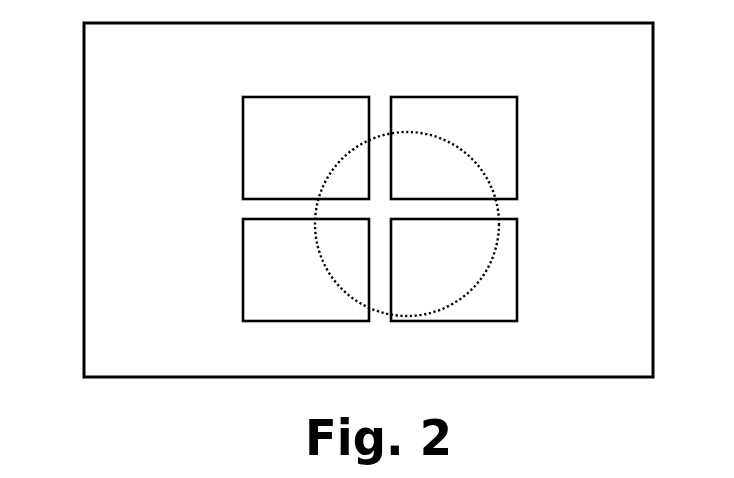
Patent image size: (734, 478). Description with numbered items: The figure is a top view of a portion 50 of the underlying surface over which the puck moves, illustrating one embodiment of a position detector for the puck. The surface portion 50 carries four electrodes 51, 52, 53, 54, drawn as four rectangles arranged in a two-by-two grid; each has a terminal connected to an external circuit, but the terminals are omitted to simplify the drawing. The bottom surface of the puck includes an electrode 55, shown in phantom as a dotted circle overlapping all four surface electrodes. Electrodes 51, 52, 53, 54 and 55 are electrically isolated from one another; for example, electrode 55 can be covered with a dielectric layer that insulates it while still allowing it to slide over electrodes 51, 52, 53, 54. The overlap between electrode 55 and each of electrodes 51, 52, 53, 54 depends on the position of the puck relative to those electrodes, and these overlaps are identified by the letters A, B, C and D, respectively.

The portion of the surface 50 is at (651, 80).
The electrode 51 is at (253, 127).
The electrode 52 is at (503, 115).
The electrode 53 is at (253, 288).
The electrode 54 is at (503, 307).
The electrode 55 is at (485, 210).